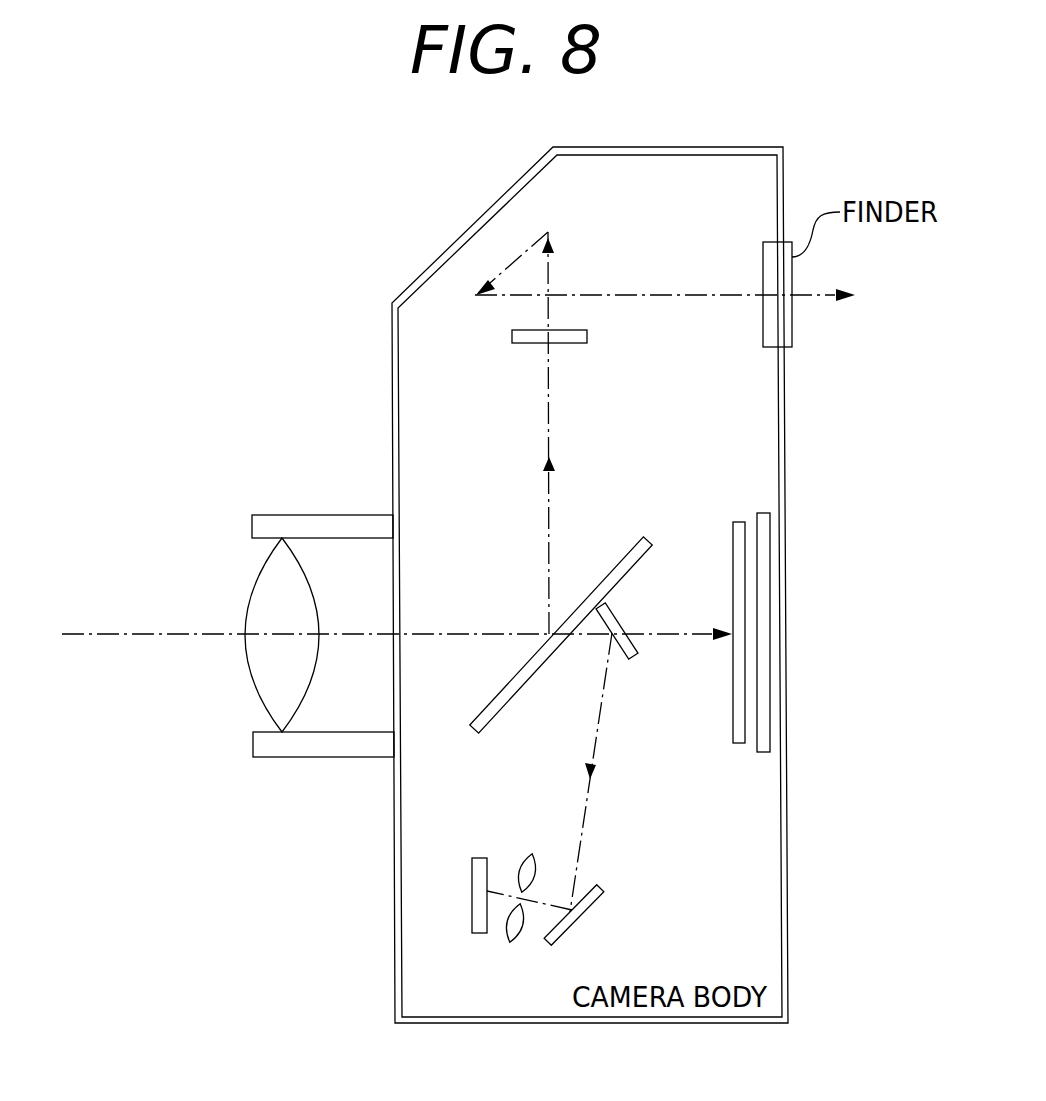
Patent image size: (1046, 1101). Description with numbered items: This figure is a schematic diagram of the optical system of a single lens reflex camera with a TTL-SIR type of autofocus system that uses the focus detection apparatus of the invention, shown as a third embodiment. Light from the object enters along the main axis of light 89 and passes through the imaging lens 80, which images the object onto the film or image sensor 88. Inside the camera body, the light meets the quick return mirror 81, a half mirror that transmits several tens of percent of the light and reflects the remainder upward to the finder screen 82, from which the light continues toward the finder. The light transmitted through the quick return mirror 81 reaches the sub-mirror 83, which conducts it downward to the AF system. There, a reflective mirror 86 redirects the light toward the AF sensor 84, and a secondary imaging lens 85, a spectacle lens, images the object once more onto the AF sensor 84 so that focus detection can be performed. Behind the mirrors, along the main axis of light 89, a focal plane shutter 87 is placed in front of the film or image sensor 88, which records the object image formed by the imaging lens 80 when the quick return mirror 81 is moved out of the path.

The imaging lens 80 is at (253, 688).
The quick return mirror 81 is at (649, 537).
The finder screen 82 is at (588, 336).
The sub-mirror 83 is at (620, 622).
The AF sensor 84 is at (483, 857).
The secondary imaging lens 85 is at (508, 938).
The reflective mirror 86 is at (605, 887).
The focal plane shutter 87 is at (731, 723).
The film or image sensor 88 is at (771, 727).
The main axis of light 89 is at (128, 638).